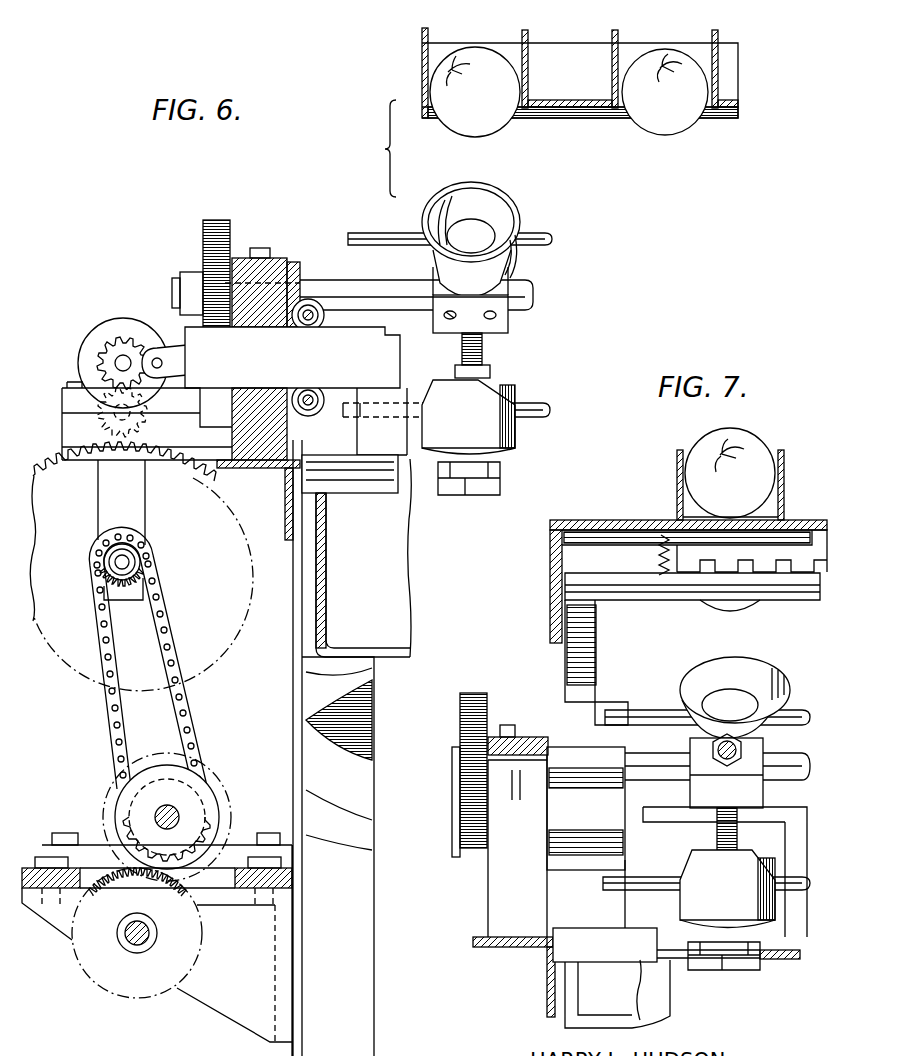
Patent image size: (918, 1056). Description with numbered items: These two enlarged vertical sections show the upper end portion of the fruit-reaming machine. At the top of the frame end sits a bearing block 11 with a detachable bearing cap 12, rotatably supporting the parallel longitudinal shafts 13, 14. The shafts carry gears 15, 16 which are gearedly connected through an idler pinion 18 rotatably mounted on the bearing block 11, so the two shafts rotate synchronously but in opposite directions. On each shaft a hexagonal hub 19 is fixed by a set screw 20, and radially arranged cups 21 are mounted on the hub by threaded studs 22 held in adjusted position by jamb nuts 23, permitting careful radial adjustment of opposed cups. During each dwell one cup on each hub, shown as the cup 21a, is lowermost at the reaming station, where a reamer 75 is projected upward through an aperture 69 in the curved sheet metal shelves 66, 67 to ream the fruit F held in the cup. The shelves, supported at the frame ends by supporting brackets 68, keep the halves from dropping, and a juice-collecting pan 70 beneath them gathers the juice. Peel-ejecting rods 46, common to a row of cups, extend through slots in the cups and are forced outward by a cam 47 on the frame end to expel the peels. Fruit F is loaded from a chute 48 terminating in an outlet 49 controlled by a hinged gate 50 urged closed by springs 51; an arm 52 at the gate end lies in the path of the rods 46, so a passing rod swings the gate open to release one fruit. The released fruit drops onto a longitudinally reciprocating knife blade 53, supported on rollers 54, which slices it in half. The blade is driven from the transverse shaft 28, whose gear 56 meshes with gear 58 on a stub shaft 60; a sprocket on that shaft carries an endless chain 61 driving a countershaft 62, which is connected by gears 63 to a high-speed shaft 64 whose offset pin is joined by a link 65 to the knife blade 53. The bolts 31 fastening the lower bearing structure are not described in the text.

In FIG. 6, the bearing block 11 is at (265, 458).
In FIG. 7, the bearing block 11 is at (509, 897).
In FIG. 7, the detachable bearing cap 12 is at (500, 738).
In FIG. 7, the shaft 13 is at (794, 770).
In FIG. 6, the shaft 14 is at (530, 293).
In FIG. 7, the gear 15 is at (472, 694).
In FIG. 6, the gear 16 is at (214, 220).
In FIG. 6, the idler pinion 18 is at (205, 258).
In FIG. 6, the hexagonal hub 19 is at (503, 324).
In FIG. 7, the hexagonal hub 19 is at (690, 752).
In FIG. 6, the set screw 20 is at (453, 320).
In FIG. 6, the cup 21 is at (514, 208).
In FIG. 7, the cup 21 is at (736, 669).
In FIG. 6, the cup in lowermost position 21a is at (490, 430).
In FIG. 7, the cup in lowermost position 21a is at (727, 889).
In FIG. 6, the threaded stud 22 is at (485, 350).
In FIG. 7, the threaded stud 22 is at (716, 836).
In FIG. 6, the jamb nut 23 is at (490, 372).
In FIG. 7, the jamb nut 23 is at (738, 765).
In FIG. 6, the transverse shaft 28 is at (130, 942).
In FIG. 6, the bolts 31 is at (40, 858).
In FIG. 6, the peel-ejecting rod 46 is at (541, 246).
In FIG. 7, the peel-ejecting rod 46 is at (648, 716).
In FIG. 7, the cam 47 is at (572, 845).
In FIG. 6, the chute 48 is at (497, 44).
In FIG. 7, the chute 48 is at (676, 470).
In FIG. 6, the outlet 49 is at (520, 112).
In FIG. 7, the hinged gate 50 is at (641, 597).
In FIG. 7, the spring 51 is at (658, 538).
In FIG. 7, the arm 52 is at (588, 662).
In FIG. 6, the knife blade 53 is at (292, 357).
In FIG. 7, the knife blade 53 is at (792, 822).
In FIG. 6, the roller 54 is at (310, 300).
In FIG. 6, the gear 56 is at (118, 883).
In FIG. 6, the gear 58 is at (112, 848).
In FIG. 6, the stub shaft 60 is at (180, 815).
In FIG. 6, the endless chain 61 is at (190, 705).
In FIG. 6, the countershaft 62 is at (128, 560).
In FIG. 6, the gear 63 is at (40, 462).
In FIG. 6, the shaft 64 is at (118, 362).
In FIG. 6, the link 65 is at (172, 355).
In FIG. 7, the sheet metal shelf 66 is at (782, 947).
In FIG. 6, the sheet metal shelf 67 is at (372, 441).
In FIG. 6, the supporting bracket 68 is at (372, 490).
In FIG. 7, the supporting bracket 68 is at (585, 948).
In FIG. 7, the aperture 69 is at (772, 958).
In FIG. 6, the juice-collecting pan 70 is at (395, 594).
In FIG. 7, the juice-collecting pan 70 is at (652, 1005).
In FIG. 6, the reamer 75 is at (483, 497).
In FIG. 7, the reamer 75 is at (742, 972).
In FIG. 6, the fruit F is at (455, 120).
In FIG. 7, the fruit F is at (752, 440).